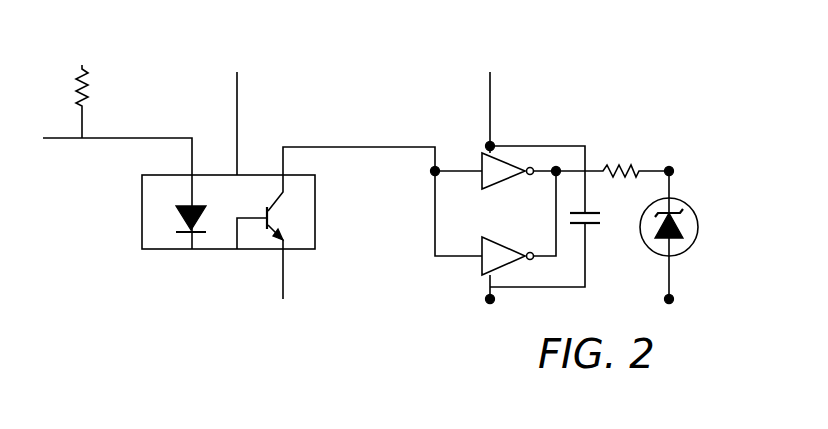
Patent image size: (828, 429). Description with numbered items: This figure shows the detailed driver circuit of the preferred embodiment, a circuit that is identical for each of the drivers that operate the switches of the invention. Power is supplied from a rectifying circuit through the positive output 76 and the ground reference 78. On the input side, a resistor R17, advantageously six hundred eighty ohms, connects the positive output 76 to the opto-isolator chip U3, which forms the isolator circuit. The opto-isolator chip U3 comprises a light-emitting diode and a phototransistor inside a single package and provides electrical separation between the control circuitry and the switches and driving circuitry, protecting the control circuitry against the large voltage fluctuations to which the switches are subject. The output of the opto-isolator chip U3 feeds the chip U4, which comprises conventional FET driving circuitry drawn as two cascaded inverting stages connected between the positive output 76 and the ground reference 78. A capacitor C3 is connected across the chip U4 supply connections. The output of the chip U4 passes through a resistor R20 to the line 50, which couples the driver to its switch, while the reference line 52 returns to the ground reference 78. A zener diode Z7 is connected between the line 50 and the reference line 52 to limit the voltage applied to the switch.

The positive output 76 is at (82, 65).
The ground reference 78 is at (211, 303).
The line 50 is at (669, 171).
The reference line 52 is at (490, 299).
The resistor R17 is at (117, 120).
The resistor R20 is at (634, 160).
The capacitor C3 is at (556, 216).
The chip U3 is at (312, 223).
The chip U4 is at (516, 223).
The diode Z7 is at (687, 235).